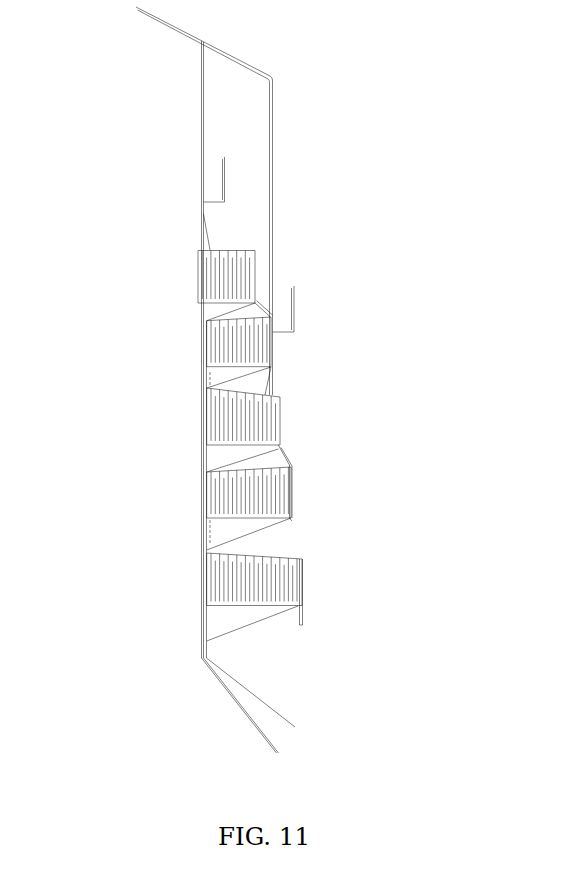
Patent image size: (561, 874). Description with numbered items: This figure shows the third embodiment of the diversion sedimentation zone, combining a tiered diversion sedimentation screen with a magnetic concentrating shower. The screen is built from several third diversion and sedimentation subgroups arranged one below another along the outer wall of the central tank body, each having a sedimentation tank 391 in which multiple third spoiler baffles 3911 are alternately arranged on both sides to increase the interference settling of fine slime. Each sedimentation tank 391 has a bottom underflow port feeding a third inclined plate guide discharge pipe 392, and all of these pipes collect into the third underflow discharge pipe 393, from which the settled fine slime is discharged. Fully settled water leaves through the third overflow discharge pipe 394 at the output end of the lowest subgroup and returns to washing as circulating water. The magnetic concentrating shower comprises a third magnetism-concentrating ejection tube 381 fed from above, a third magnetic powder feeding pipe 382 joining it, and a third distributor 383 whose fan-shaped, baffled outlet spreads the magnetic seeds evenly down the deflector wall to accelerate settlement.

The third magnetism-concentrating ejection tube 381 is at (203, 164).
The third magnetic powder feeding pipe 382 is at (272, 157).
The third distributor 383 is at (202, 228).
The sedimentation tank 391 is at (280, 399).
The third spoiler baffle 3911 is at (287, 497).
The third inclined plate guide discharge pipe 392 is at (210, 535).
The third underflow discharge pipe 393 is at (237, 705).
The third overflow discharge pipe 394 is at (262, 306).